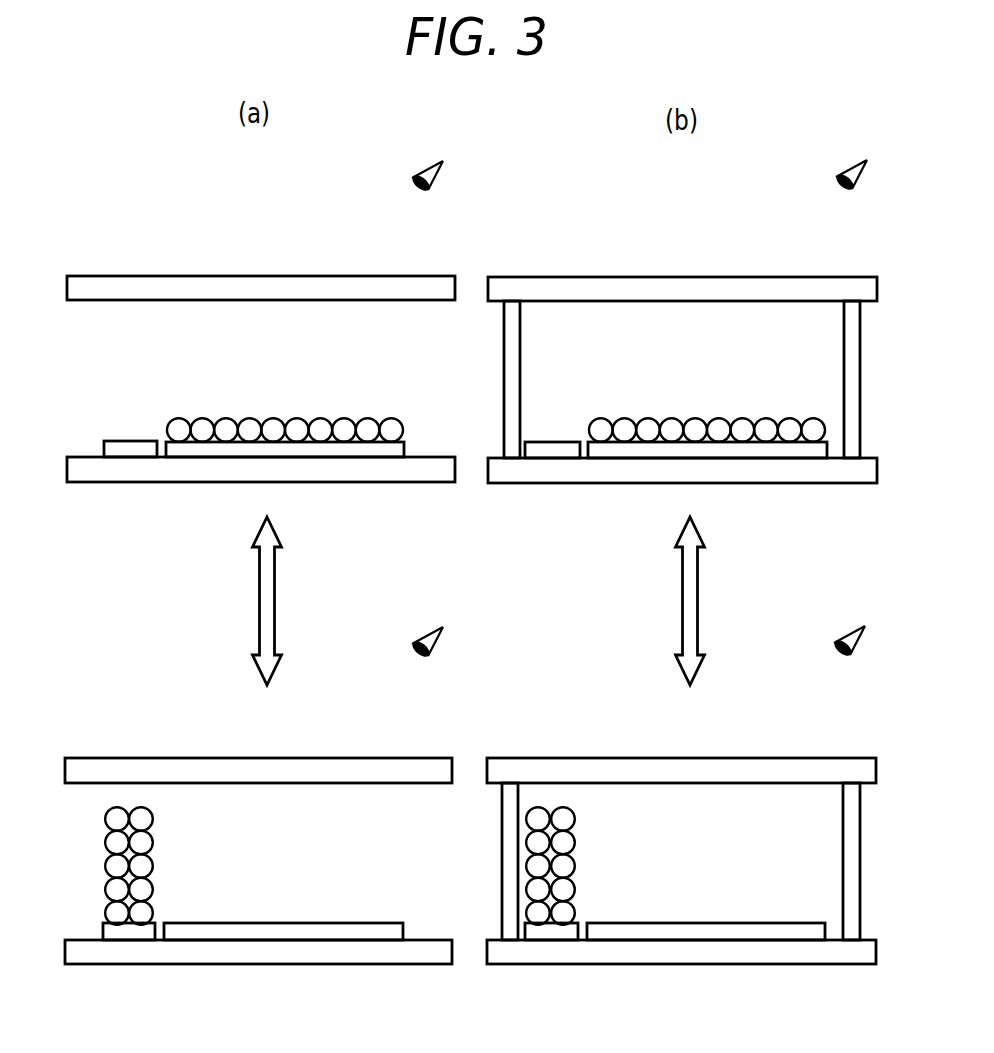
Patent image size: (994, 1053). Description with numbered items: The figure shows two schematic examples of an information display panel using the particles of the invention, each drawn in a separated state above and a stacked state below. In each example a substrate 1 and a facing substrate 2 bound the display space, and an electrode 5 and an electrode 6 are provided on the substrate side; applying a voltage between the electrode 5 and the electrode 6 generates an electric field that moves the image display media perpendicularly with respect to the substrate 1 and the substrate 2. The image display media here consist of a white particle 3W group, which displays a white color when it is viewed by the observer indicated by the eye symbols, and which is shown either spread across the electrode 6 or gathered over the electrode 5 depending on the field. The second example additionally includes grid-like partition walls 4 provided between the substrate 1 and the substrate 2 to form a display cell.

The substrate 1 is at (215, 472).
The substrate 2 is at (285, 289).
The white particle 3W is at (390, 427).
The partition wall 4 is at (513, 373).
The electrode 5 is at (128, 452).
The electrode 6 is at (367, 452).